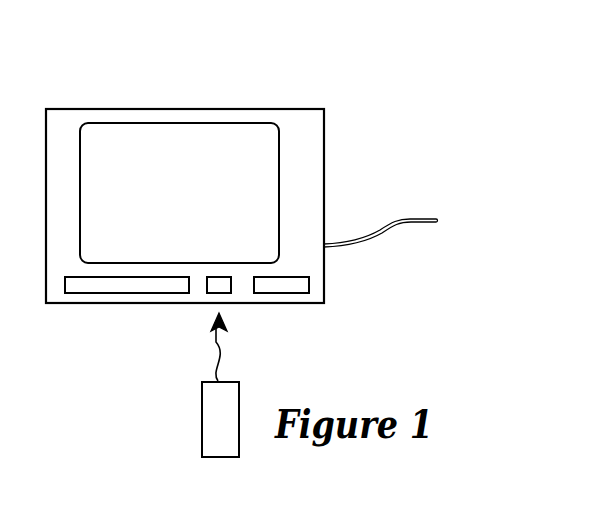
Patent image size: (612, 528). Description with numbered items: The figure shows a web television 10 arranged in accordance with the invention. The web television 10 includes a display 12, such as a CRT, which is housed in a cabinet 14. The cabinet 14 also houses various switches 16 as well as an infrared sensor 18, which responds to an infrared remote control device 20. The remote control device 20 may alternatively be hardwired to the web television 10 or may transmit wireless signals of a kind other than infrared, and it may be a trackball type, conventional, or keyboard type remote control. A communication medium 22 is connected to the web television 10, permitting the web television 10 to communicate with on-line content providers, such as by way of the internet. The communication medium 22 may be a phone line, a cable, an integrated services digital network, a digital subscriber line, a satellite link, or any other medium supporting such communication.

The web television 10 is at (446, 121).
The display 12 is at (265, 172).
The cabinet 14 is at (272, 108).
The switches 16 is at (113, 291).
The infrared sensor 18 is at (225, 291).
The remote control device 20 is at (229, 380).
The communication medium 22 is at (407, 216).